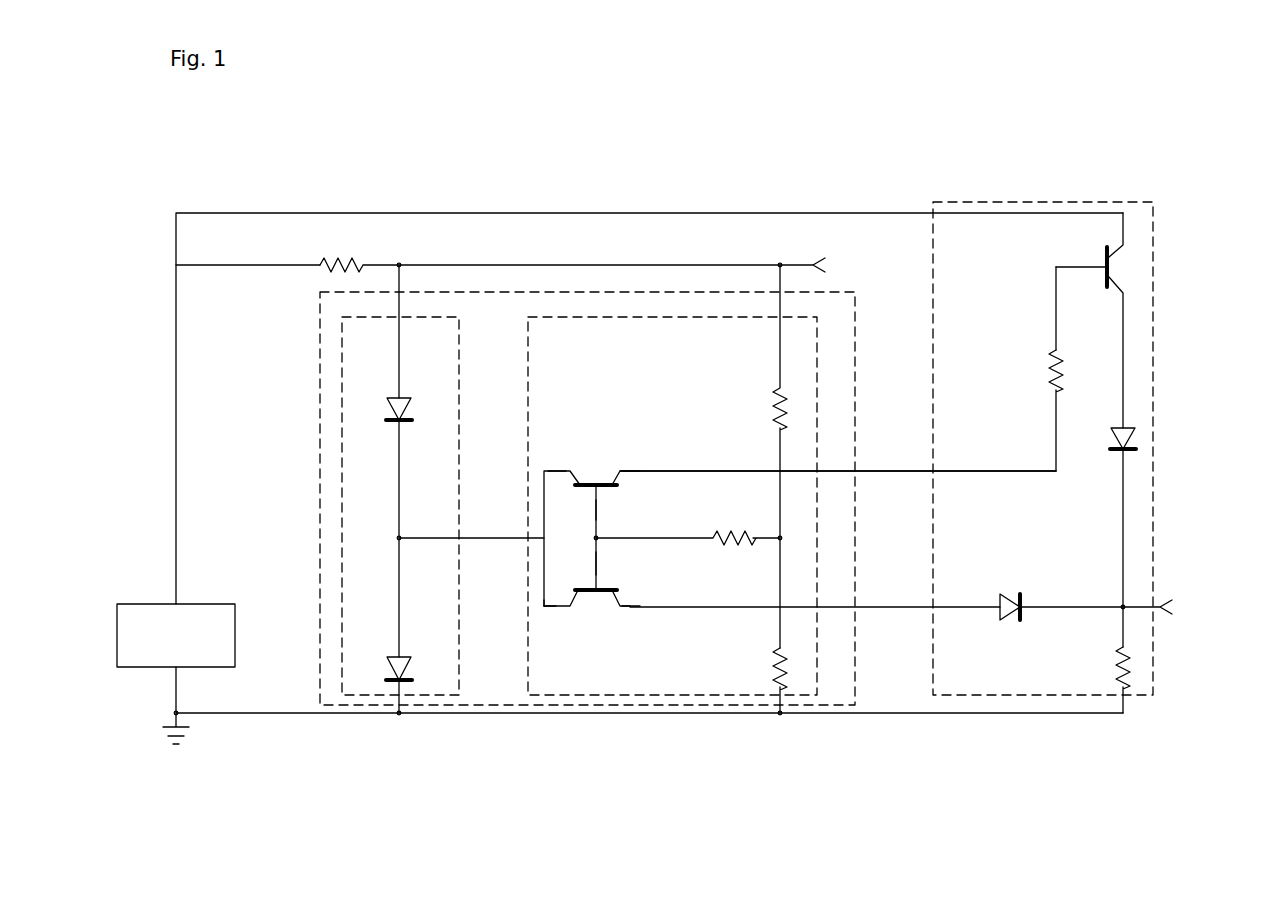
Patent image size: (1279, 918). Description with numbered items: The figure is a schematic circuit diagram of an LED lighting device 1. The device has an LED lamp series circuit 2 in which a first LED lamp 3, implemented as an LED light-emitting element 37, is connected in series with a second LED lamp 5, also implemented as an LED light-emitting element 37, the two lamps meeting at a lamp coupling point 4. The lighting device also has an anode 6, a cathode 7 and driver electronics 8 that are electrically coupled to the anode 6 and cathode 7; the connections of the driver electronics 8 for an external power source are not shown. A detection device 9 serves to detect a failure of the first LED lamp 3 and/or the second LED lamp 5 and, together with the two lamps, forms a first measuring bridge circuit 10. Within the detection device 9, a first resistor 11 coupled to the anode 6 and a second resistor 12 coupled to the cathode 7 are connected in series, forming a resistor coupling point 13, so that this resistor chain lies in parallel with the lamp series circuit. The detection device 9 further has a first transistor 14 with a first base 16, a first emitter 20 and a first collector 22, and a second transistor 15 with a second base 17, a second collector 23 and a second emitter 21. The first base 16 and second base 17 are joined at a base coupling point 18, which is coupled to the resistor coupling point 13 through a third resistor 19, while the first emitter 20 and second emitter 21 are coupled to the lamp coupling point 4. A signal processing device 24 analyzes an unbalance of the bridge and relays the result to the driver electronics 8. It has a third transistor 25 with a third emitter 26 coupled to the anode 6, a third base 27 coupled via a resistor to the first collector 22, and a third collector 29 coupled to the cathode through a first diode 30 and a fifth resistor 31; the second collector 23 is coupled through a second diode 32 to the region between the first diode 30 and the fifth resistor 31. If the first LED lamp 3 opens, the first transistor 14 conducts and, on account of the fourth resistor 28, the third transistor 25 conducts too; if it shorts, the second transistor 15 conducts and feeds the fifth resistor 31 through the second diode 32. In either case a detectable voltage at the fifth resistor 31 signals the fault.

The LED lighting device 1 is at (647, 131).
The LED lamp series circuit 2 is at (373, 312).
The first LED lamp 3 is at (363, 412).
The lamp coupling point 4 is at (386, 537).
The second LED lamp 5 is at (365, 672).
The anode 6 is at (175, 575).
The cathode 7 is at (175, 690).
The driver electronics 8 is at (175, 632).
The detection device 9 is at (548, 314).
The first measuring bridge circuit 10 is at (453, 288).
The first resistor 11 is at (775, 381).
The second resistor 12 is at (799, 670).
The resistor coupling point 13 is at (789, 538).
The first transistor 14 is at (602, 441).
The second transistor 15 is at (602, 634).
The first base 16 is at (595, 515).
The second base 17 is at (595, 560).
The base coupling point 18 is at (598, 528).
The third resistor 19 is at (737, 558).
The first emitter 20 is at (558, 470).
The second emitter 21 is at (555, 607).
The first collector 22 is at (630, 470).
The second collector 23 is at (631, 607).
The signal processing device 24 is at (985, 197).
The third transistor 25 is at (1136, 268).
The third emitter 26 is at (1123, 229).
The third base 27 is at (1075, 265).
The fourth resistor 28 is at (1084, 370).
The third collector 29 is at (1123, 302).
The first diode 30 is at (1141, 437).
The fifth resistor 31 is at (1141, 662).
The second diode 32 is at (1013, 634).
The LED light-emitting element 37 is at (258, 553).